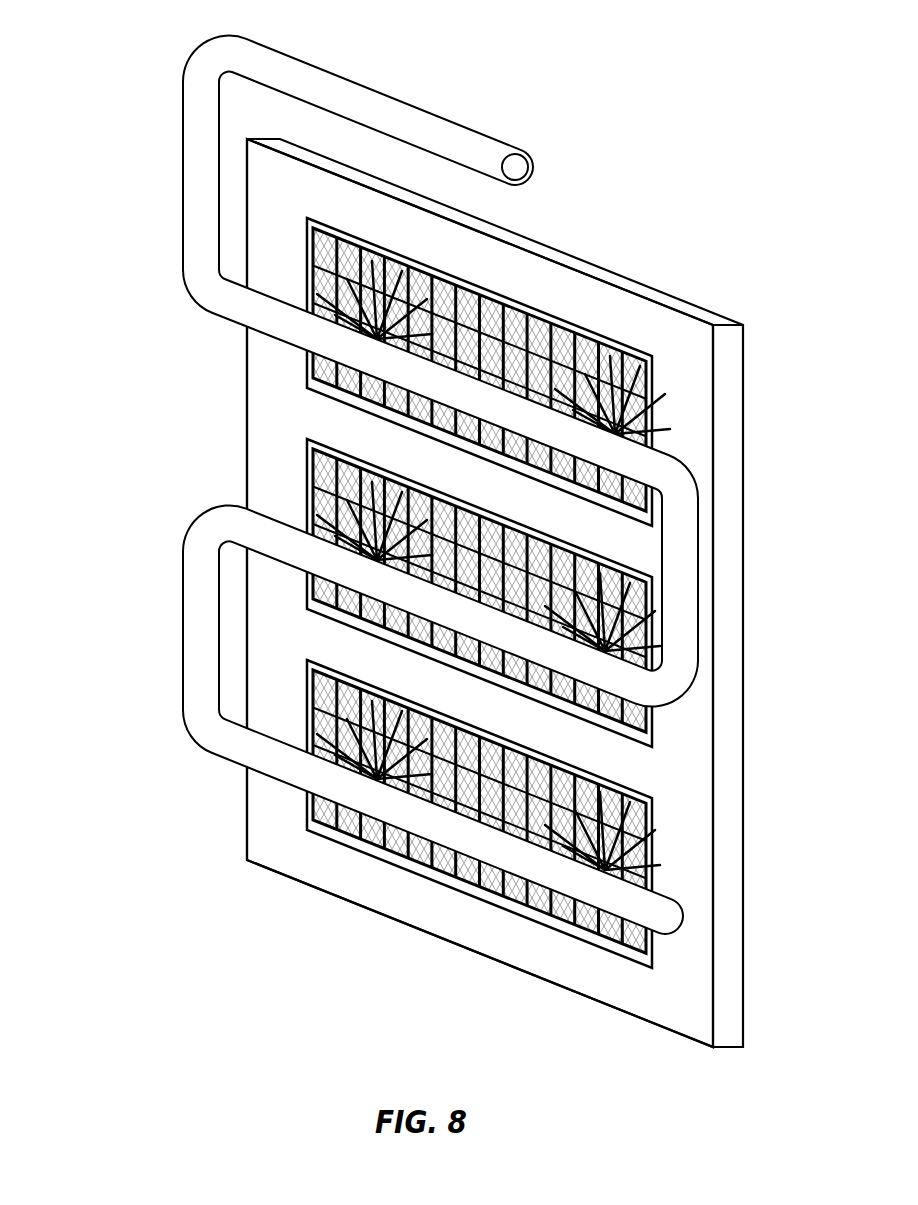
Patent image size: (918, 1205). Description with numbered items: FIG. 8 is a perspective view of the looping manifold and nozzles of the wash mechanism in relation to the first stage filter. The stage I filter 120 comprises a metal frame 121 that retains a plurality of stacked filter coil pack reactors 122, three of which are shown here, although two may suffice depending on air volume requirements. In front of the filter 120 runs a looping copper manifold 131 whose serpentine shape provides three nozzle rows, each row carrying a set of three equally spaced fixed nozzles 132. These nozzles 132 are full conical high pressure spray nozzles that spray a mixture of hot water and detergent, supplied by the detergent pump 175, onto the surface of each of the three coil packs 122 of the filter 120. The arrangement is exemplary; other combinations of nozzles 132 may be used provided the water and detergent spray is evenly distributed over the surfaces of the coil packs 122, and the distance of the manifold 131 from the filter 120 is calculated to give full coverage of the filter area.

The stage I filter 120 is at (740, 303).
The metal frame 121 is at (692, 973).
The filter coil pack reactors 122 is at (597, 353).
The looping copper manifold 131 is at (182, 135).
The fixed nozzles 132 is at (612, 418).
The detergent pump 175 is at (548, 178).